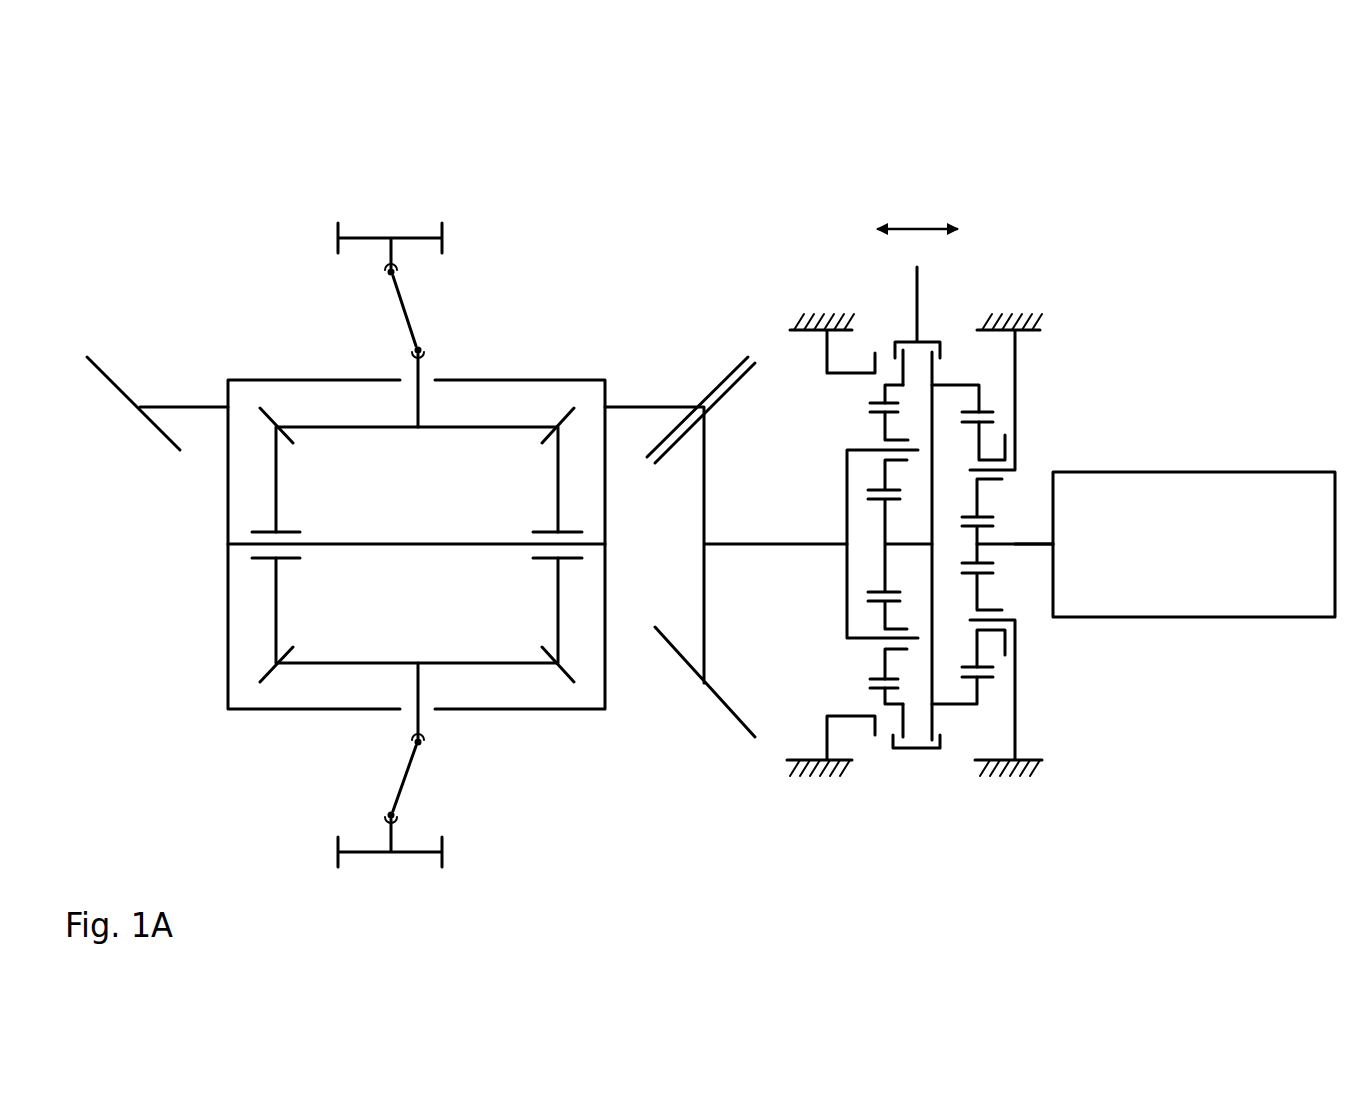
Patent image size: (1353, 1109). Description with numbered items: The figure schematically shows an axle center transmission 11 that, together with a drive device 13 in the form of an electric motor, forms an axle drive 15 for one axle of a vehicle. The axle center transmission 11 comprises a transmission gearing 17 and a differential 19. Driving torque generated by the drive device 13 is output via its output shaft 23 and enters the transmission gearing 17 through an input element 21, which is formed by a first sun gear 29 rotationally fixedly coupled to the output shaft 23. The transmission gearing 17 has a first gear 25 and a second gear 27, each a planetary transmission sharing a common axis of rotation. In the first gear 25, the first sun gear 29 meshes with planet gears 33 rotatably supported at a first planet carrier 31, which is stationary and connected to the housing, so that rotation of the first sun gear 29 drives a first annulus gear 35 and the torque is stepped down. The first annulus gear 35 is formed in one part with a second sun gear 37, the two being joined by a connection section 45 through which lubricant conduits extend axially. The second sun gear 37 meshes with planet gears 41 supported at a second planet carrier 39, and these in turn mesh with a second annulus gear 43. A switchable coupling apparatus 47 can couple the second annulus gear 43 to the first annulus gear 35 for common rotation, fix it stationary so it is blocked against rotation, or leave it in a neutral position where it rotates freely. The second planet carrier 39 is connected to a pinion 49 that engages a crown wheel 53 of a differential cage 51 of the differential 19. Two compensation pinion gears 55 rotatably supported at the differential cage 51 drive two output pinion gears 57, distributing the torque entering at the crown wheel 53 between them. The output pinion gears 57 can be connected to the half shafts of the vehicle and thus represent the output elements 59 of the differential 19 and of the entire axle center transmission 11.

The axle center transmission 11 is at (624, 197).
The drive device 13 is at (1250, 483).
The axle drive 15 is at (1218, 197).
The transmission gearing 17 is at (926, 810).
The differential 19 is at (524, 798).
The input element 21 is at (980, 538).
The output shaft 23 is at (1032, 547).
The first gear 25 is at (969, 283).
The second gear 27 is at (877, 286).
The first sun gear 29 is at (982, 544).
The first planet carrier 31 is at (1017, 358).
The planet gears 33 is at (980, 442).
The first annulus gear 35 is at (980, 400).
The second sun gear 37 is at (882, 565).
The second planet carrier 39 is at (847, 473).
The planet gears 41 is at (880, 428).
The second annulus gear 43 is at (883, 388).
The connection section 45 is at (933, 518).
The coupling apparatus 47 is at (917, 315).
The pinion 49 is at (730, 390).
The differential cage 51 is at (540, 380).
The crown wheel 53 is at (710, 393).
The compensation pinion gears 55 is at (277, 502).
The output pinion gears 57 is at (400, 427).
The output elements 59 is at (393, 662).